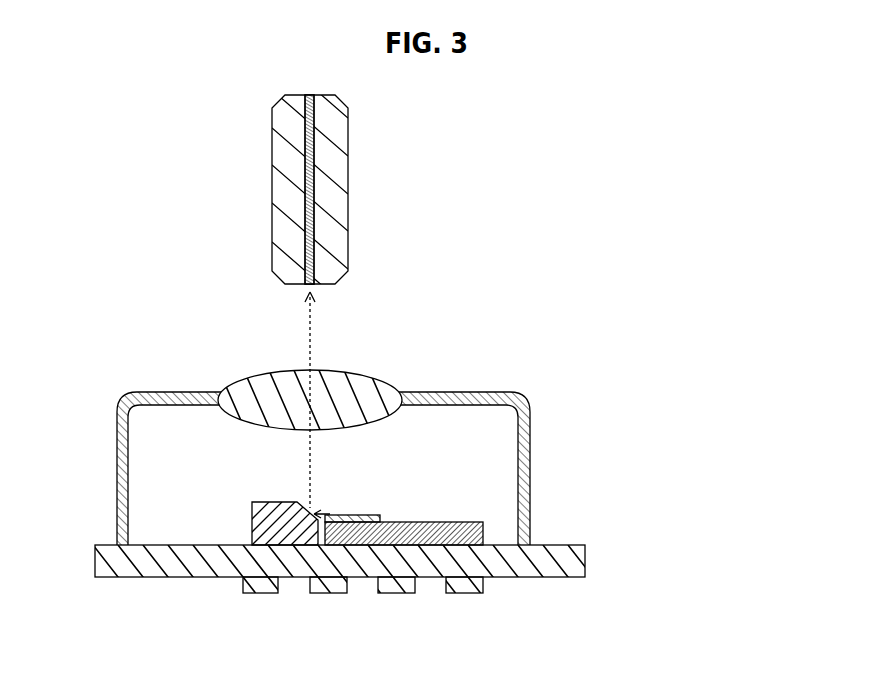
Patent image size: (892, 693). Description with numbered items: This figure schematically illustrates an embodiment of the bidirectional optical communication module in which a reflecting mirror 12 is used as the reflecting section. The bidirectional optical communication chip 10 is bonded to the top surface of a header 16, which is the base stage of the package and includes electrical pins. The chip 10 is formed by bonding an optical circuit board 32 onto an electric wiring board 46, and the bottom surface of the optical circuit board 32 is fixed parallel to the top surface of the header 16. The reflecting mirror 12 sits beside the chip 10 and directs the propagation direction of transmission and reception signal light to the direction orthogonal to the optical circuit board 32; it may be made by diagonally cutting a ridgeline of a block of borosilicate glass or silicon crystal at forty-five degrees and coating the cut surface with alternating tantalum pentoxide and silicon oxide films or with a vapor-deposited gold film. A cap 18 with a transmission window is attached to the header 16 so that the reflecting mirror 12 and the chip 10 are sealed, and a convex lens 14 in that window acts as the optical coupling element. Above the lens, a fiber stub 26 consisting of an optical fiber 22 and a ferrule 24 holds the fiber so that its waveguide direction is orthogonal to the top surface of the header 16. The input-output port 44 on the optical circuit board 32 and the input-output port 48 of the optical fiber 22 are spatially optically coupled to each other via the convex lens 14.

The bidirectional optical communication chip 10 is at (481, 501).
The reflecting mirror 12 is at (272, 532).
The convex lens 14 is at (368, 392).
The header 16 is at (575, 560).
The cap 18 is at (118, 440).
The optical fiber 22 is at (335, 146).
The ferrule 24 is at (314, 119).
The fiber stub 26 is at (392, 180).
The optical circuit board 32 is at (380, 518).
The input-output port 44 is at (328, 506).
The electric wiring board 46 is at (483, 535).
The input-output port of the optical fiber 48 is at (302, 294).